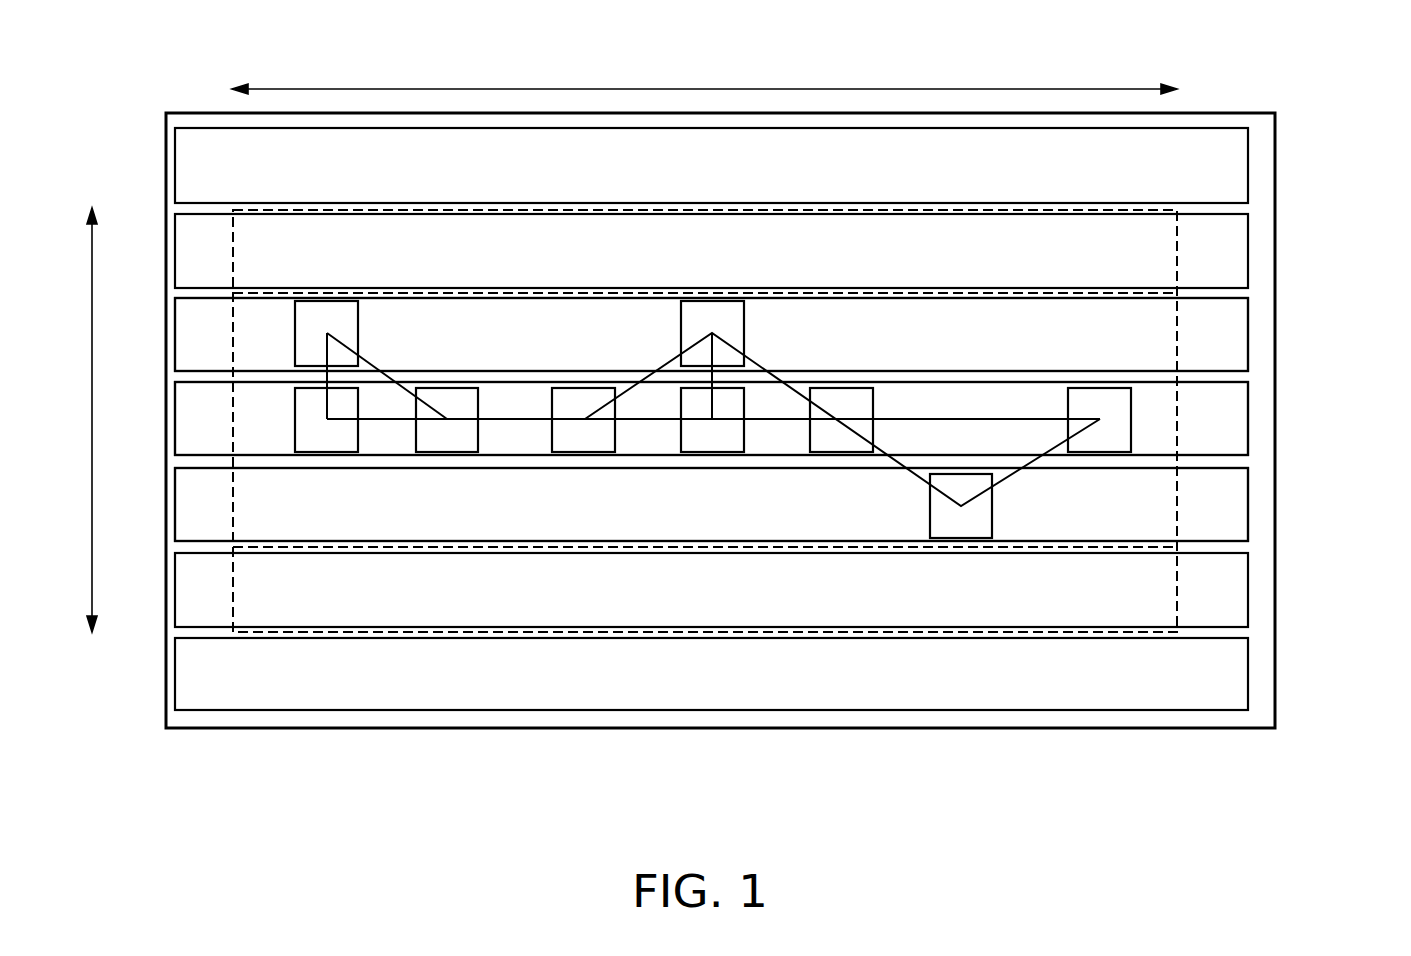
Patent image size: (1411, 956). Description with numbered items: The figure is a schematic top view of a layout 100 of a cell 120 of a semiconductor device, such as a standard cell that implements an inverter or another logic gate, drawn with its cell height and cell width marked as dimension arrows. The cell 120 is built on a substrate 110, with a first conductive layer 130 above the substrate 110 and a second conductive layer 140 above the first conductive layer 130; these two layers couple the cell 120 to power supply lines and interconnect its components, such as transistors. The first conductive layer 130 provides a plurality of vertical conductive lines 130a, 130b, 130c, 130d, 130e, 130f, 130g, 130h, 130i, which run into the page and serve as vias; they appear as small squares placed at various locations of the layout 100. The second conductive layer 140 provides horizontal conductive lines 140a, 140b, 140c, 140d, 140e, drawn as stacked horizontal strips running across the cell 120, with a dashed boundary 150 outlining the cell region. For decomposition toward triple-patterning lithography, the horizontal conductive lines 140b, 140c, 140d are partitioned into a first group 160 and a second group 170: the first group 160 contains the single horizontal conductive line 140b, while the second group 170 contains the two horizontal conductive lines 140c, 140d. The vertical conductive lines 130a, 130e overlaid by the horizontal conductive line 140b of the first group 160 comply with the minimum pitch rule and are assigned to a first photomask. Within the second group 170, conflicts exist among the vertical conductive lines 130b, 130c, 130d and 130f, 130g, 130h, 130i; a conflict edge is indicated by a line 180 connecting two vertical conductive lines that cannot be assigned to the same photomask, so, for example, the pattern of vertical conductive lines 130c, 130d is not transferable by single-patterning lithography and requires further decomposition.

The layout 100 is at (203, 61).
The substrate 110 is at (1276, 162).
The cell 120 is at (804, 210).
The first conductive layer 130 is at (689, 566).
The vertical conductive line 130a is at (295, 337).
The vertical conductive line 130b is at (327, 452).
The vertical conductive line 130c is at (447, 452).
The vertical conductive line 130d is at (583, 452).
The vertical conductive line 130e is at (680, 333).
The vertical conductive line 130f is at (712, 452).
The vertical conductive line 130g is at (842, 452).
The vertical conductive line 130h is at (961, 538).
The vertical conductive line 130i is at (1105, 588).
The second conductive layer 140 is at (790, 420).
The horizontal conductive line 140a is at (1249, 252).
The horizontal conductive line 140b is at (1249, 335).
The horizontal conductive line 140c is at (1249, 418).
The horizontal conductive line 140d is at (1249, 505).
The horizontal conductive line 140e is at (763, 590).
The boundary line 150 is at (585, 293).
The first group 160 is at (187, 331).
The second group 170 is at (166, 393).
The line 180 is at (513, 419).